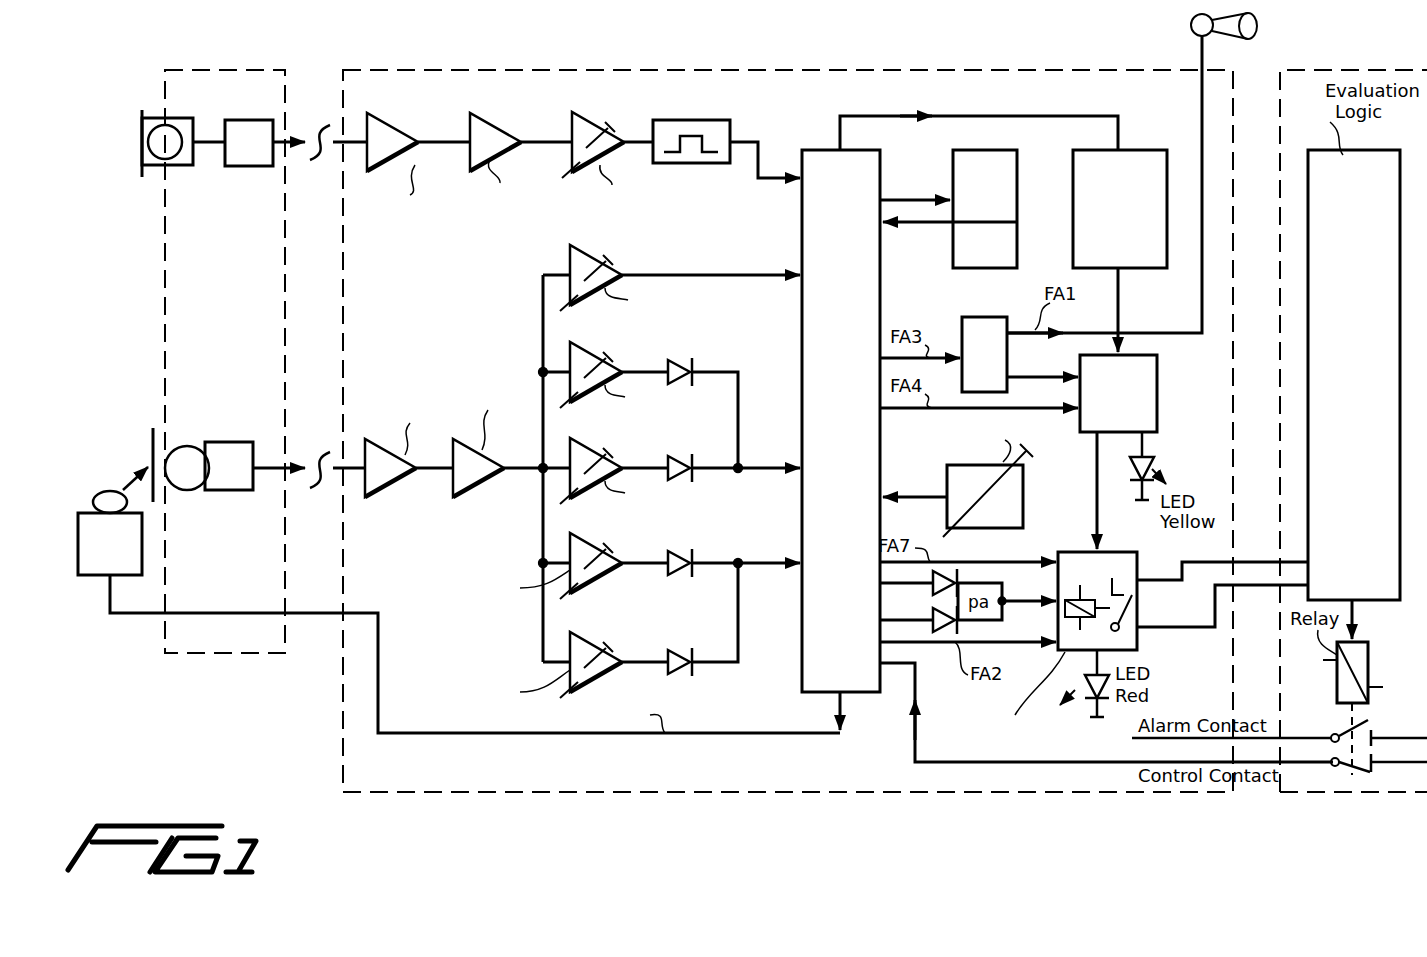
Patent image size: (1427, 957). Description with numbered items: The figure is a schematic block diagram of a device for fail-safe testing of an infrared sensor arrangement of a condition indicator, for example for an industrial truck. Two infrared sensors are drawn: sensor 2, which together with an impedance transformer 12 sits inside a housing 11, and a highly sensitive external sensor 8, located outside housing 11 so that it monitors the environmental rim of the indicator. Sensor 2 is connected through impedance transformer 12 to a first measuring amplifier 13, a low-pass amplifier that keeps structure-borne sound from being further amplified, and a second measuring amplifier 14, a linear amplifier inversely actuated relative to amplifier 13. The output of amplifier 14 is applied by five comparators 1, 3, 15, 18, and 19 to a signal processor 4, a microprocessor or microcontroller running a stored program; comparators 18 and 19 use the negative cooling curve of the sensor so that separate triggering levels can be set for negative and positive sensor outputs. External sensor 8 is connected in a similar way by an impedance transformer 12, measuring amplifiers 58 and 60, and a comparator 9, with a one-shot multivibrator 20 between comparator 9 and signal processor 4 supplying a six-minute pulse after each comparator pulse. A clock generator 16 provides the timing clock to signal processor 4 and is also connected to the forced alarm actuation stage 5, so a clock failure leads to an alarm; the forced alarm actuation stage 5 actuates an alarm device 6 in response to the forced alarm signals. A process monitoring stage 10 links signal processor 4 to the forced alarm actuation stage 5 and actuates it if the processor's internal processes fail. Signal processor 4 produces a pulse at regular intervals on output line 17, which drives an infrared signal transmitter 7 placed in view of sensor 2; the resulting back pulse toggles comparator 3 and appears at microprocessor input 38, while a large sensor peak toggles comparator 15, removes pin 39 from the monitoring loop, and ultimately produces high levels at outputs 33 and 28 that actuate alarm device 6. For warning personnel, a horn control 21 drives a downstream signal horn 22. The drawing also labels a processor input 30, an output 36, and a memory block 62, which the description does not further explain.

The comparator 1 is at (590, 262).
The infrared sensor 2 is at (185, 490).
The comparator 3 is at (592, 358).
The signal processor 4 is at (800, 222).
The forced alarm actuation stage 5 is at (1080, 428).
The alarm device 6 is at (1117, 552).
The infrared signal transmitter 7 is at (93, 577).
The infrared sensor 8 is at (150, 118).
The comparator 9 is at (592, 130).
The process monitoring stage 10 is at (1140, 150).
The housing 11 is at (285, 318).
The impedance transformer 12 is at (243, 120).
The first measuring amplifier 13 is at (388, 495).
The second measuring amplifier 14 is at (478, 495).
The comparator 15 is at (592, 550).
The clock generator 16 is at (1023, 490).
The output line 17 is at (775, 733).
The comparator 18 is at (592, 455).
The comparator 19 is at (592, 648).
The one-shot multivibrator 20 is at (705, 120).
The horn control 21 is at (982, 317).
The signal horn 22 is at (1190, 28).
The output 28 is at (880, 620).
The microprocessor input 30 is at (803, 183).
The output 33 is at (880, 583).
The microprocessor output 36 is at (880, 663).
The microprocessor input 38 is at (803, 470).
The pin 39 is at (880, 497).
The measuring amplifier 58 is at (385, 130).
The measuring amplifier 60 is at (490, 130).
The read only memory 62 is at (953, 165).